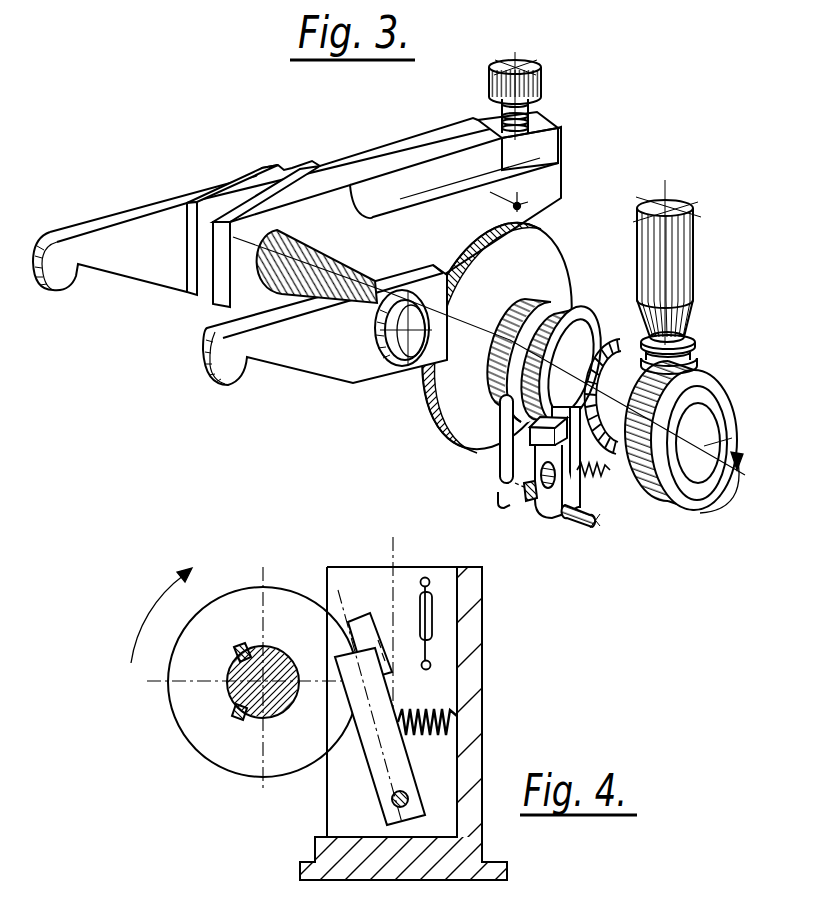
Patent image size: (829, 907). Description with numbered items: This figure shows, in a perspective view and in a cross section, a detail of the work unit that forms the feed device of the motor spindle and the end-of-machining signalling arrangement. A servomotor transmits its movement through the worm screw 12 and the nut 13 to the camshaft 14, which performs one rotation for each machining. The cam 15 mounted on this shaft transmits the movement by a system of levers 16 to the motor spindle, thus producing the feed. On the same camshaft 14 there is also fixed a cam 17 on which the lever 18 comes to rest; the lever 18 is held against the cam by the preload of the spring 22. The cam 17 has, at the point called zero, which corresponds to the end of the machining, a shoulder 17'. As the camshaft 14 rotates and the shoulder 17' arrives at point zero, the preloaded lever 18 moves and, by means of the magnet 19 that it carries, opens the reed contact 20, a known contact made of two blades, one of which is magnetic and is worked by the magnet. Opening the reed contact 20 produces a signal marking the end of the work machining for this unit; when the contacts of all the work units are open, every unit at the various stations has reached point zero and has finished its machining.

In FIG. 3, the worm screw 12 is at (666, 217).
In FIG. 3, the nut 13 is at (620, 356).
In FIG. 3, the camshaft 14 is at (694, 397).
In FIG. 3, the cam 15 is at (535, 263).
In FIG. 3, the system of levers 16 is at (301, 217).
In FIG. 3, the cam 17 is at (549, 339).
In FIG. 4, the cam 17 is at (247, 657).
In FIG. 4, the shoulder 17' is at (337, 600).
In FIG. 3, the lever 18 is at (553, 518).
In FIG. 4, the lever 18 is at (383, 787).
In FIG. 3, the magnet 19 is at (530, 492).
In FIG. 4, the magnet 19 is at (359, 640).
In FIG. 3, the reed contact 20 is at (512, 482).
In FIG. 4, the reed contact 20 is at (433, 597).
In FIG. 3, the spring 22 is at (588, 482).
In FIG. 4, the spring 22 is at (485, 668).